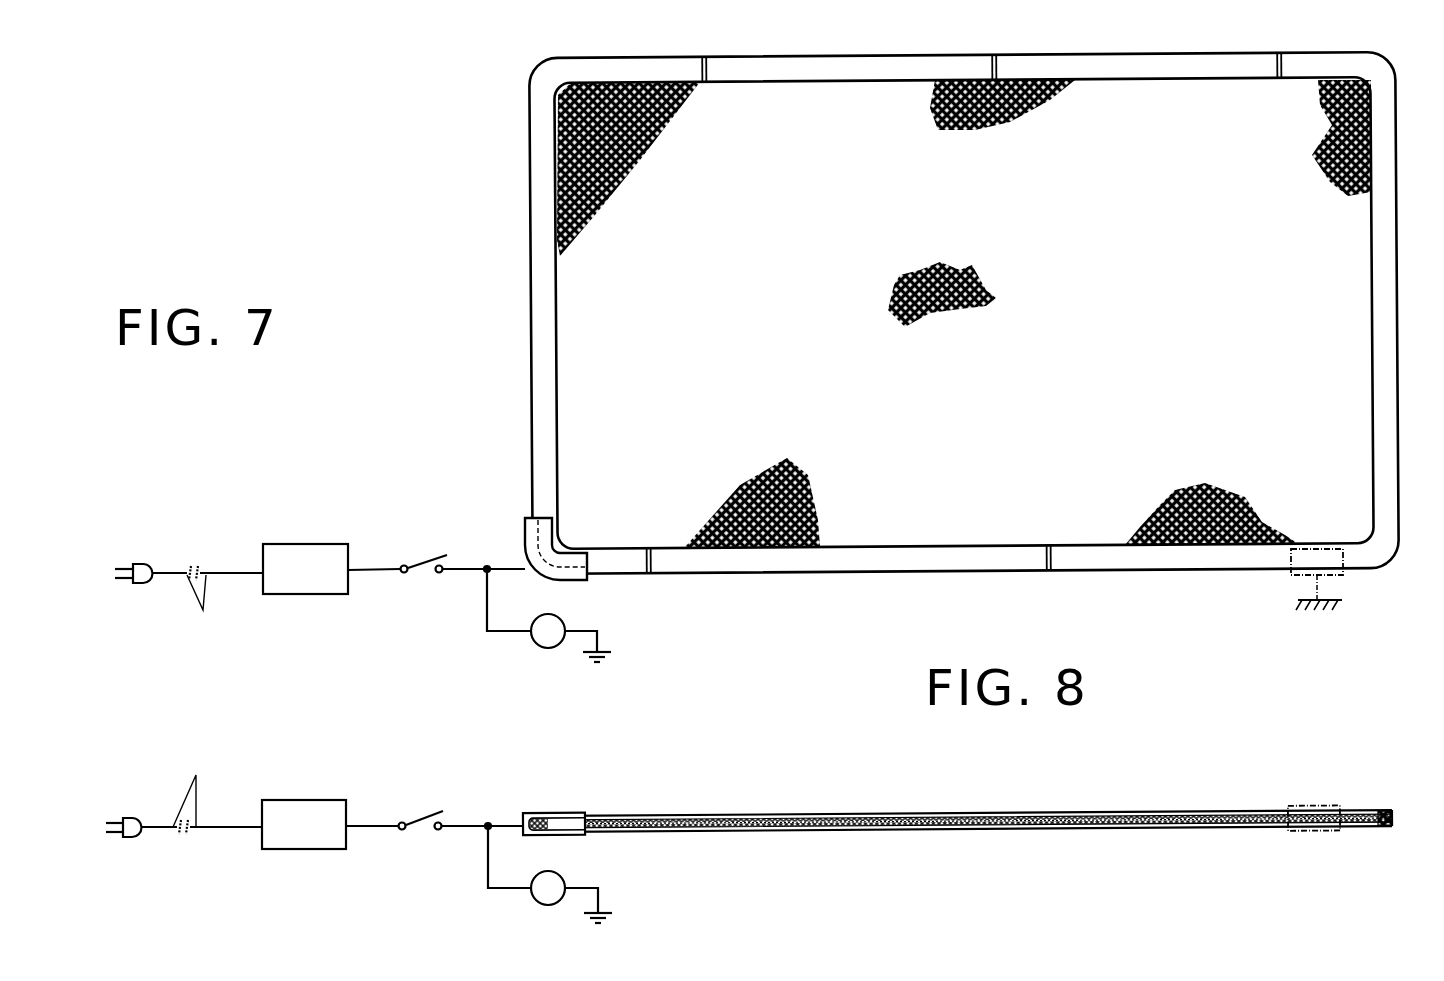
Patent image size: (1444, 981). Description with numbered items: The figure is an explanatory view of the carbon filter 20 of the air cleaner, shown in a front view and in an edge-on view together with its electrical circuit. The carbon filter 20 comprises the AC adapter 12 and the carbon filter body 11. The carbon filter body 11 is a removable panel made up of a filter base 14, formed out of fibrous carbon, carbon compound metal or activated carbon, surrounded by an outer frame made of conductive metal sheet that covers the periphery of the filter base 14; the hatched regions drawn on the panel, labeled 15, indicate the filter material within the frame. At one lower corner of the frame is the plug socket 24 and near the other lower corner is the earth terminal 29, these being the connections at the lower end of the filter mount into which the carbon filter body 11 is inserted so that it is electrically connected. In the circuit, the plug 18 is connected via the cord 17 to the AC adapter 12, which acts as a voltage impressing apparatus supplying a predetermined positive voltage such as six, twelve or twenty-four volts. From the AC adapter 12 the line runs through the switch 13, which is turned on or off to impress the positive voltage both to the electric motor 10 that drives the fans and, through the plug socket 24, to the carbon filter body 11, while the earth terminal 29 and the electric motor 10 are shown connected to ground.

In FIG. 7, the electric motor 10 is at (535, 645).
In FIG. 8, the electric motor 10 is at (533, 899).
In FIG. 7, the carbon filter body 11 is at (530, 213).
In FIG. 8, the carbon filter body 11 is at (1105, 810).
In FIG. 7, the AC adapter 12 is at (317, 553).
In FIG. 8, the AC adapter 12 is at (297, 800).
In FIG. 7, the switch 13 is at (424, 574).
In FIG. 8, the switch 13 is at (432, 811).
In FIG. 7, the filter base 14 is at (576, 345).
In FIG. 8, the filter base 14 is at (870, 815).
In FIG. 7, the electrochromic coating 15 is at (538, 284).
In FIG. 8, the electrochromic coating 15 is at (1010, 812).
In FIG. 7, the cord 17 is at (223, 606).
In FIG. 8, the cord 17 is at (217, 790).
In FIG. 7, the plug 18 is at (144, 564).
In FIG. 8, the plug 18 is at (131, 818).
In FIG. 7, the carbon filter 20 is at (350, 171).
In FIG. 8, the carbon filter 20 is at (1342, 772).
In FIG. 7, the plug socket 24 is at (525, 532).
In FIG. 8, the plug socket 24 is at (546, 811).
In FIG. 7, the earth terminal 29 is at (1292, 578).
In FIG. 8, the earth terminal 29 is at (1300, 805).